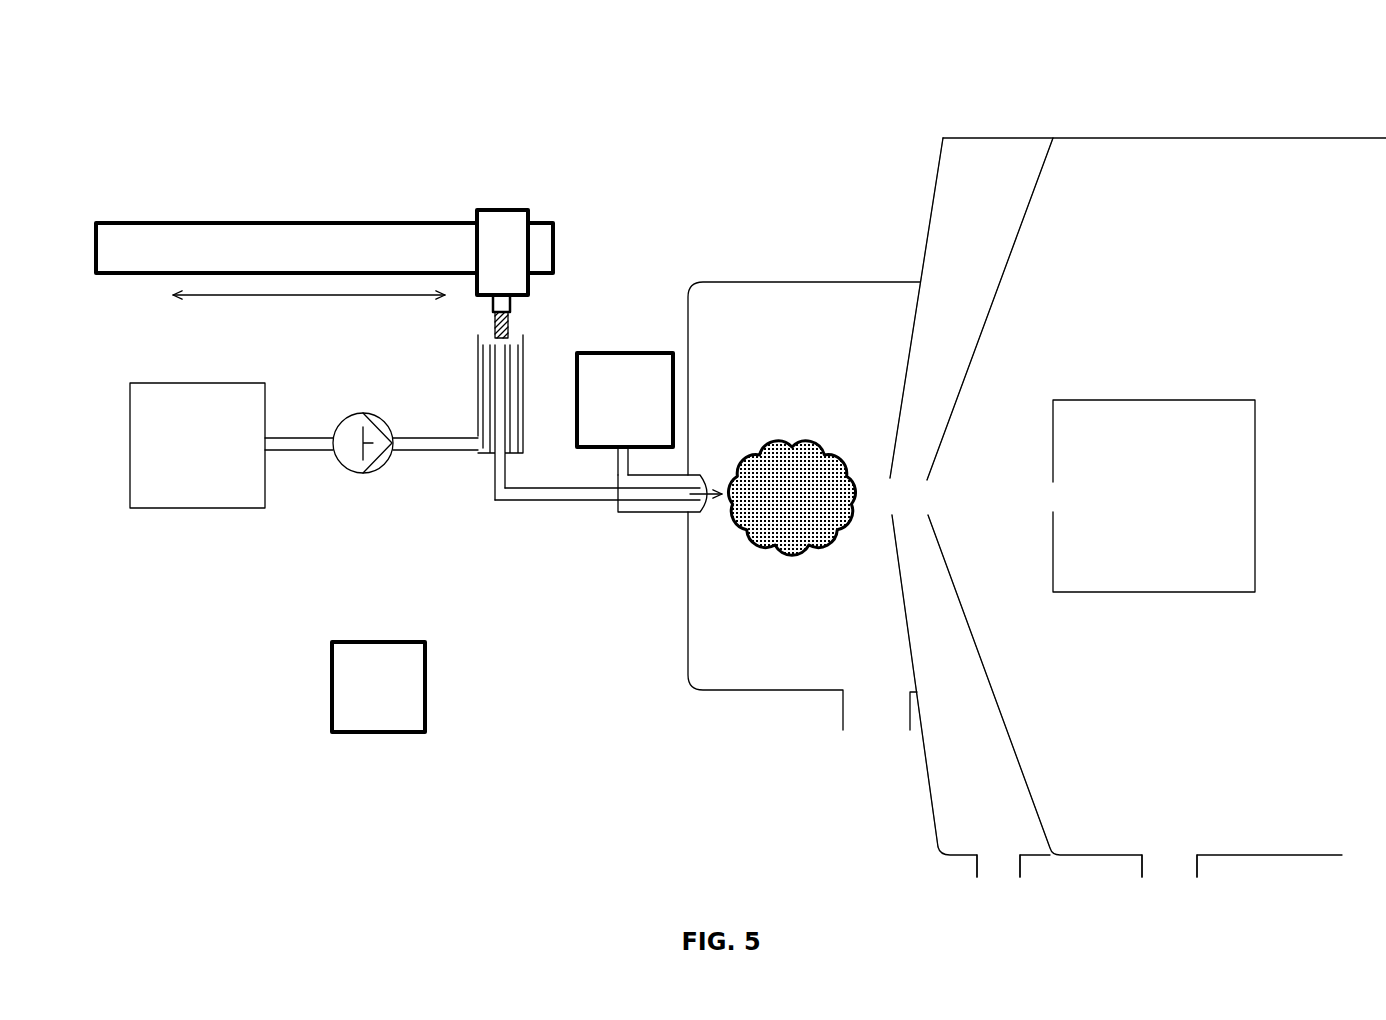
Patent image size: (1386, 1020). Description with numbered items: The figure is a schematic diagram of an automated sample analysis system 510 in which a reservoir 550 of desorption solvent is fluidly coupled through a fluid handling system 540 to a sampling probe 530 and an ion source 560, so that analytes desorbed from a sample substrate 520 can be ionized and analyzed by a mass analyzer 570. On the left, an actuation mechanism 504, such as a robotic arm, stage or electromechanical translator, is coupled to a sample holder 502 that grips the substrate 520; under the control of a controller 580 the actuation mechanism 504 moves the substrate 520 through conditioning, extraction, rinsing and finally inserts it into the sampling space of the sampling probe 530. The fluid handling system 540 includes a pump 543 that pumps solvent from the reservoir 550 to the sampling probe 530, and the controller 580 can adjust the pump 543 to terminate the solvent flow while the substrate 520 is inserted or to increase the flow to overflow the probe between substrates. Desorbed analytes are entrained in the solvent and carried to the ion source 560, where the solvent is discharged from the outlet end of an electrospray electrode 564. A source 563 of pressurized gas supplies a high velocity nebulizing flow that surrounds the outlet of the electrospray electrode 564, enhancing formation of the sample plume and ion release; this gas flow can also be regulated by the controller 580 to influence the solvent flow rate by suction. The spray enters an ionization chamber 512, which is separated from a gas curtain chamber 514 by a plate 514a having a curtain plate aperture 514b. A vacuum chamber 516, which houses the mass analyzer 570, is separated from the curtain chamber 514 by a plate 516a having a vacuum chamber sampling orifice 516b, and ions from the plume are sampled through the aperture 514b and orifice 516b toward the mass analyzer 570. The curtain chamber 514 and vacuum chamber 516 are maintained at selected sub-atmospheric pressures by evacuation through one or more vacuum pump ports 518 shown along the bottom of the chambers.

The sample analysis system 510 is at (632, 130).
The actuation mechanism 504 is at (295, 237).
The sample holder 502 is at (500, 248).
The sample substrate 520 is at (510, 310).
The sampling probe 530 is at (542, 354).
The fluid handling system 540 is at (546, 526).
The pump 543 is at (347, 470).
The reservoir 550 is at (197, 445).
The source of pressurized gas 563 is at (625, 414).
The electrospray electrode 564 is at (670, 513).
The ion source 560 is at (633, 529).
The controller 580 is at (378, 687).
The ionization chamber 512 is at (742, 327).
The gas curtain chamber 514 is at (990, 184).
The curtain plate 514a is at (905, 387).
The curtain plate aperture 514b is at (879, 494).
The vacuum chamber 516 is at (1058, 184).
The vacuum chamber plate 516a is at (1003, 265).
The vacuum chamber sampling orifice 516b is at (949, 496).
The vacuum pump ports 518 is at (1008, 886).
The mass analyzer 570 is at (1154, 496).